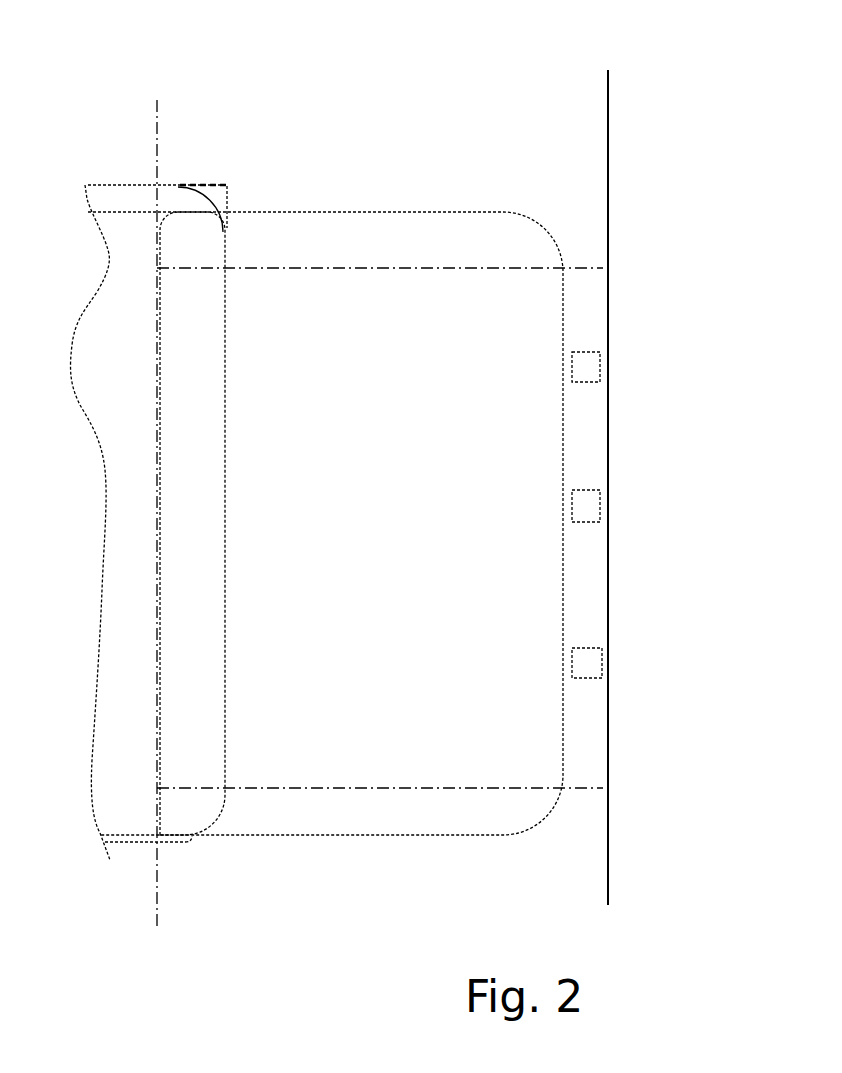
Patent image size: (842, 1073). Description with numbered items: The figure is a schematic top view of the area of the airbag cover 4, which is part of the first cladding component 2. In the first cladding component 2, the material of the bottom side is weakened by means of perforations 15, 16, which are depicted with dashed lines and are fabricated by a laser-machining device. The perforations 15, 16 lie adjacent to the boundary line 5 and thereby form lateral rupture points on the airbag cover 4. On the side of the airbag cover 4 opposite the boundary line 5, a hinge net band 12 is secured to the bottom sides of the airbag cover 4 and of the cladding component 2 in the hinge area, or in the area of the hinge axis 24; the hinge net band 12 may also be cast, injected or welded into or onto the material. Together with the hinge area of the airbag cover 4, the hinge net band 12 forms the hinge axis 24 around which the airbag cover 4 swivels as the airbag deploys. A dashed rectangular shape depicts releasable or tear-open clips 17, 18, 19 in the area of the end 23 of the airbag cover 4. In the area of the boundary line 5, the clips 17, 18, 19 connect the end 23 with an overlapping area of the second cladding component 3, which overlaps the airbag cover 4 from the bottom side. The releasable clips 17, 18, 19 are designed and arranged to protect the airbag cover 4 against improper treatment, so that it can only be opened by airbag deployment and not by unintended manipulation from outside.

The first cladding component 2 is at (325, 496).
The second cladding component 3 is at (740, 158).
The airbag cover 4 is at (516, 348).
The boundary line 5 is at (609, 88).
The hinge net band 12 is at (143, 189).
The perforation 15 is at (400, 271).
The perforation 16 is at (342, 786).
The releasable clip 17 is at (588, 368).
The releasable clip 18 is at (588, 505).
The releasable clip 19 is at (588, 665).
The end 23 is at (610, 620).
The hinge axis 24 is at (158, 228).